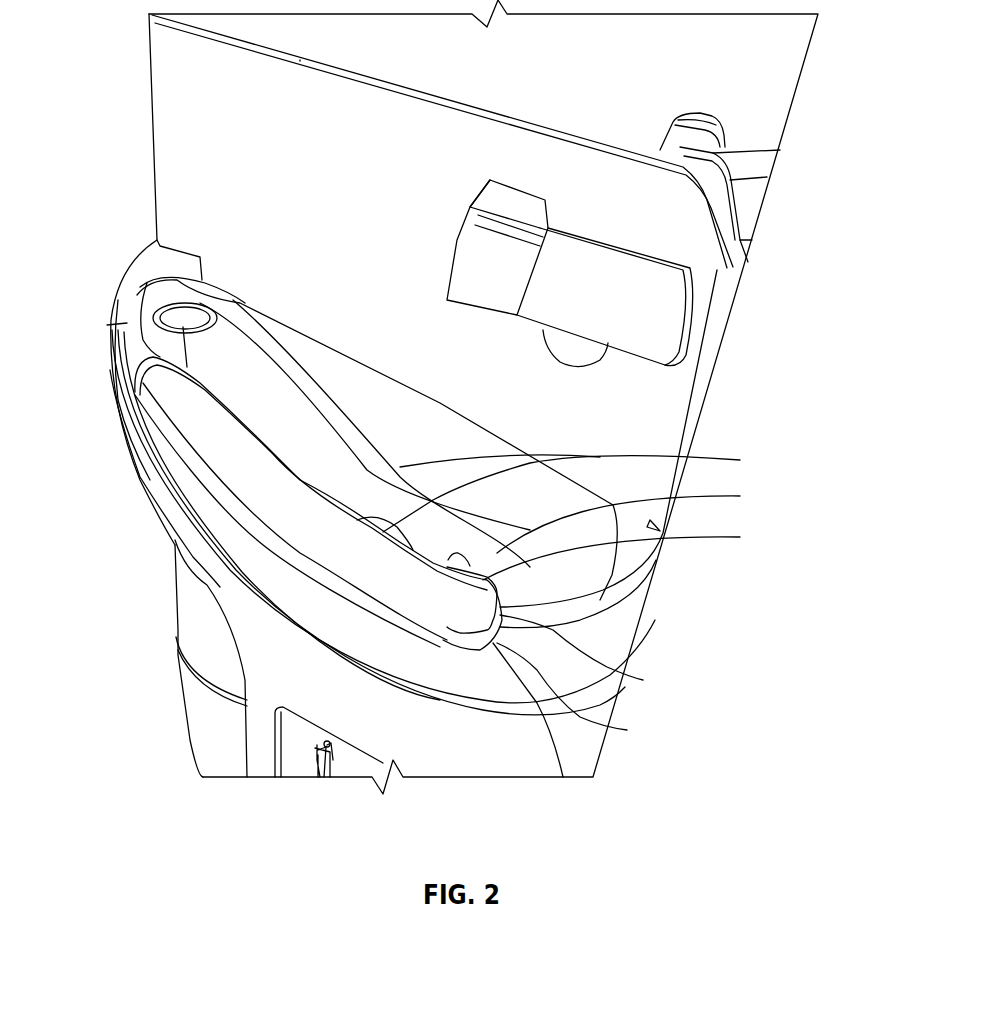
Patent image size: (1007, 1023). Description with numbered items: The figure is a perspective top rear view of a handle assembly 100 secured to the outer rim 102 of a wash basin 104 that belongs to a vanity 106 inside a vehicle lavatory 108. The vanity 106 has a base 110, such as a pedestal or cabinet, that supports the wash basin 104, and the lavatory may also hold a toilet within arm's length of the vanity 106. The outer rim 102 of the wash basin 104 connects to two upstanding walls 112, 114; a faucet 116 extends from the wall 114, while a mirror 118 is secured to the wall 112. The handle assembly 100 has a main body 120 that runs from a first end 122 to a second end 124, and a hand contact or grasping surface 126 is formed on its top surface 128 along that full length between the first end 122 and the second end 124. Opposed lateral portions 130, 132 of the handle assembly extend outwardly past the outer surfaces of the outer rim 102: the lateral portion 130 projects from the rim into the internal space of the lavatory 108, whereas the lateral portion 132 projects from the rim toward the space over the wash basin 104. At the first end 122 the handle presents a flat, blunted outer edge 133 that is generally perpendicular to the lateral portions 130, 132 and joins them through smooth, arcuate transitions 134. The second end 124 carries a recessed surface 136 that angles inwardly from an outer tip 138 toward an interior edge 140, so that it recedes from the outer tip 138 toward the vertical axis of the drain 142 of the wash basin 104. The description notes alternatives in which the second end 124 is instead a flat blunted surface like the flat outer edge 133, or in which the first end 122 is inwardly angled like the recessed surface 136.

The handle assembly 100 is at (177, 553).
The outer rim 102 is at (127, 323).
The wash basin 104 is at (683, 493).
The vanity 106 is at (690, 415).
The vehicle lavatory 108 is at (733, 209).
The base 110 is at (300, 740).
The upstanding wall 112 is at (175, 73).
The upstanding wall 114 is at (708, 333).
The faucet 116 is at (640, 288).
The mirror 118 is at (763, 60).
The main body 120 is at (287, 494).
The first end 122 is at (563, 777).
The second end 124 is at (147, 388).
The grasping surface 126 is at (367, 565).
The top surface 128 is at (213, 448).
The lateral portion 130 is at (445, 640).
The lateral portion 132 is at (447, 563).
The flat outer edge 133 is at (643, 680).
The arcuate transitions 134 is at (667, 537).
The recessed surface 136 is at (140, 290).
The outer tip 138 is at (150, 363).
The interior edge 140 is at (224, 396).
The drain 142 is at (740, 460).